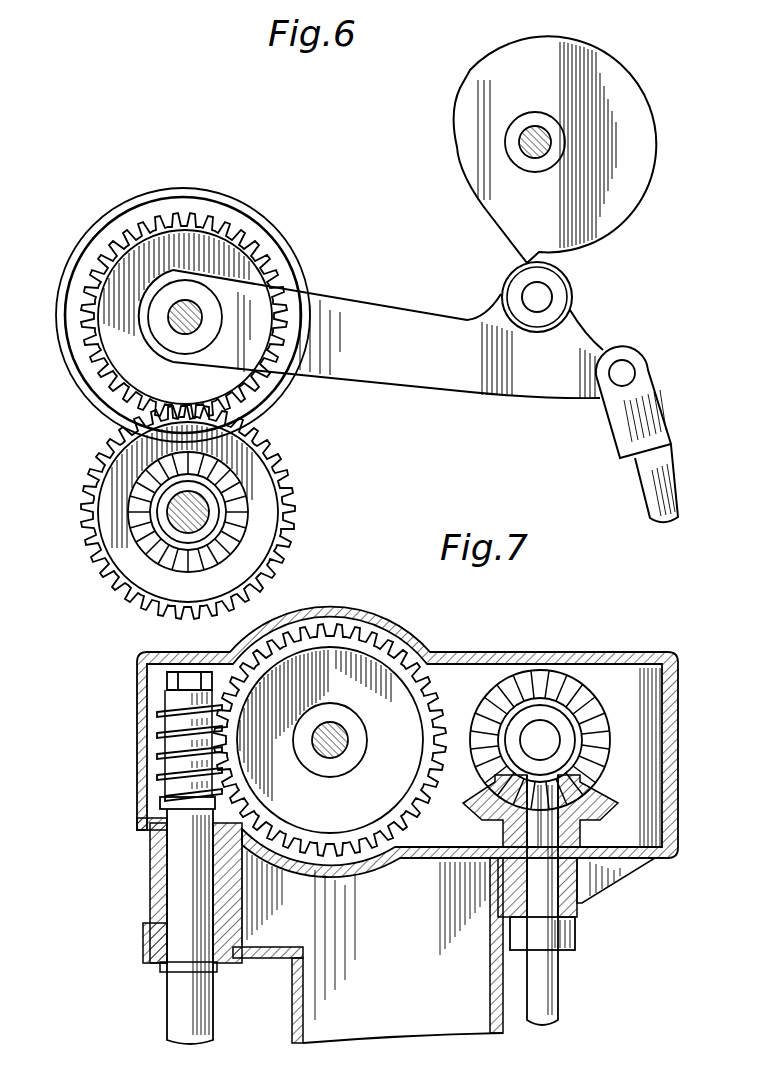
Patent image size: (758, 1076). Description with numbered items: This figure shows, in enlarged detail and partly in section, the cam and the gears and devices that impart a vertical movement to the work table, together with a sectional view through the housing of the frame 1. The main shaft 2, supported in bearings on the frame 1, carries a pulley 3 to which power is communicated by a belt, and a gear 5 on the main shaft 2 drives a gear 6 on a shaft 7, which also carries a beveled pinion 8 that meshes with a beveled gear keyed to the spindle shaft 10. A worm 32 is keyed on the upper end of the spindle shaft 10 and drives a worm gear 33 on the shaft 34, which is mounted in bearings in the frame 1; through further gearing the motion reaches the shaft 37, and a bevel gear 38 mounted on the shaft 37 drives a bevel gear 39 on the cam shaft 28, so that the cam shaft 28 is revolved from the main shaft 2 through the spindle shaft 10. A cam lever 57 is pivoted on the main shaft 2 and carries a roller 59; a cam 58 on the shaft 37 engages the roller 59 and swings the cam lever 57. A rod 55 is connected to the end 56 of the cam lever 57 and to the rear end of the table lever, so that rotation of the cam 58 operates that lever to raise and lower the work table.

In FIG. 7, the frame 1 is at (393, 1037).
In FIG. 6, the main shaft 2 is at (204, 324).
In FIG. 6, the pulley 3 is at (86, 390).
In FIG. 6, the gear 5 is at (268, 272).
In FIG. 6, the gear 6 is at (275, 480).
In FIG. 6, the shaft 7 is at (170, 523).
In FIG. 6, the beveled pinion 8 is at (242, 503).
In FIG. 7, the spindle shaft 10 is at (182, 858).
In FIG. 7, the cam shaft 28 is at (546, 983).
In FIG. 7, the worm 32 is at (165, 726).
In FIG. 7, the worm gear 33 is at (330, 636).
In FIG. 7, the shaft 34 is at (336, 742).
In FIG. 6, the shaft 37 is at (520, 150).
In FIG. 7, the shaft 37 is at (532, 738).
In FIG. 7, the bevel gear 38 is at (578, 712).
In FIG. 7, the bevel gear 39 is at (598, 802).
In FIG. 6, the rod 55 is at (655, 505).
In FIG. 6, the end of cam lever 56 is at (628, 371).
In FIG. 6, the cam lever 57 is at (415, 322).
In FIG. 6, the cam 58 is at (608, 122).
In FIG. 6, the roller 59 is at (575, 300).